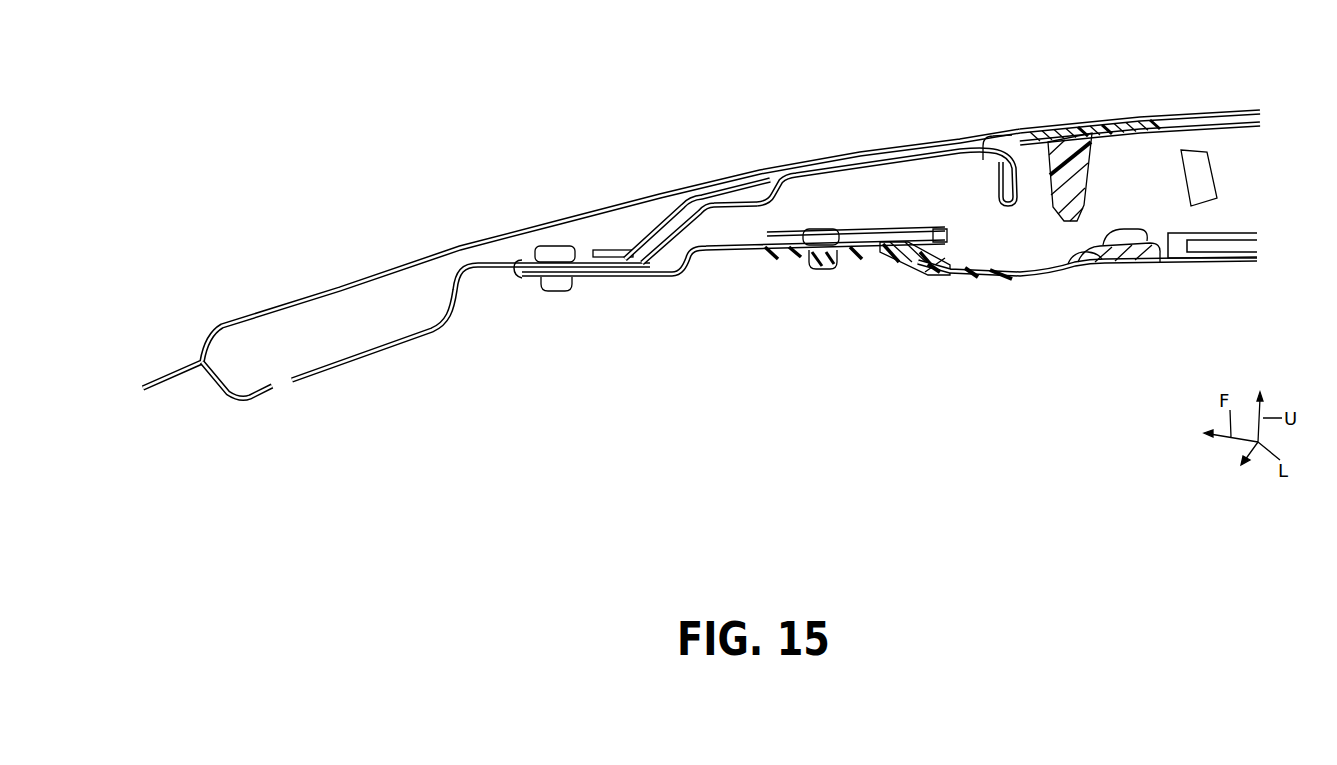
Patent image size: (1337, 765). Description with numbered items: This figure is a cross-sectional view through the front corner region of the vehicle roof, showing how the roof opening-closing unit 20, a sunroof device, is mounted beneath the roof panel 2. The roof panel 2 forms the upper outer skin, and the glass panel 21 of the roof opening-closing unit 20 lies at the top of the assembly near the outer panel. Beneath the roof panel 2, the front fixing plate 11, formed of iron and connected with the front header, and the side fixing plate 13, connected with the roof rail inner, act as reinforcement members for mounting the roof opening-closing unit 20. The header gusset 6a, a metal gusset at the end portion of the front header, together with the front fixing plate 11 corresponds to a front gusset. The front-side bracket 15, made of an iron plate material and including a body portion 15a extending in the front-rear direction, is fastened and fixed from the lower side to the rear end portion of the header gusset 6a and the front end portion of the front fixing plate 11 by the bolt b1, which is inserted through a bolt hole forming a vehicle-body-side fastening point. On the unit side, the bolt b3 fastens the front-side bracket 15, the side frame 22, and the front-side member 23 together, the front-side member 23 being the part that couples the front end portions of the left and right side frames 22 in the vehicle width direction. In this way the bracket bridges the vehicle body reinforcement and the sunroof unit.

The roof panel 2 is at (594, 207).
The header gusset 6a is at (338, 362).
The front fixing plate 11 is at (732, 206).
The side fixing plate 13 is at (942, 160).
The front-side bracket 15 is at (636, 283).
The body portion 15a is at (717, 255).
The bolt b1 is at (550, 288).
The bolt b3 is at (822, 272).
The roof opening-closing unit 20 is at (1021, 291).
The glass panel 21 is at (1210, 112).
The side frame 22 is at (1207, 263).
The front-side member 23 is at (910, 272).